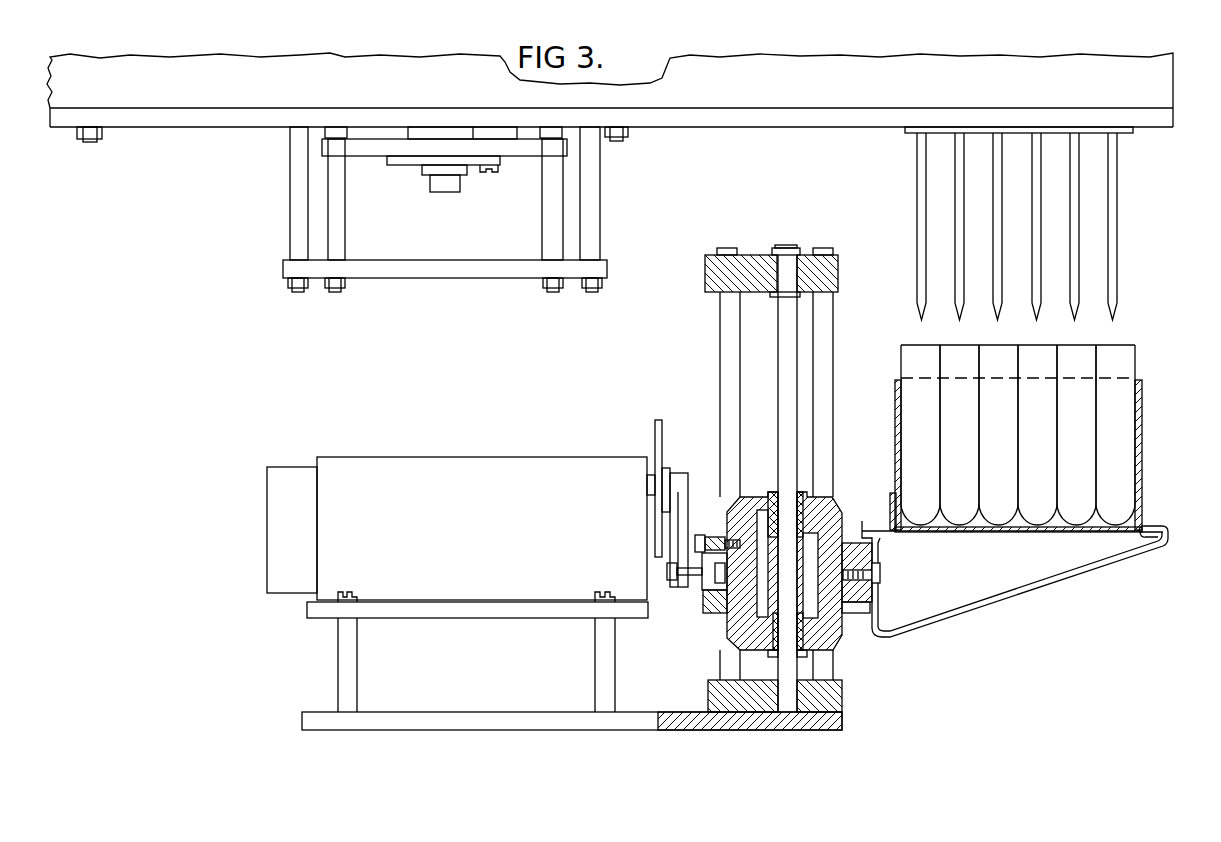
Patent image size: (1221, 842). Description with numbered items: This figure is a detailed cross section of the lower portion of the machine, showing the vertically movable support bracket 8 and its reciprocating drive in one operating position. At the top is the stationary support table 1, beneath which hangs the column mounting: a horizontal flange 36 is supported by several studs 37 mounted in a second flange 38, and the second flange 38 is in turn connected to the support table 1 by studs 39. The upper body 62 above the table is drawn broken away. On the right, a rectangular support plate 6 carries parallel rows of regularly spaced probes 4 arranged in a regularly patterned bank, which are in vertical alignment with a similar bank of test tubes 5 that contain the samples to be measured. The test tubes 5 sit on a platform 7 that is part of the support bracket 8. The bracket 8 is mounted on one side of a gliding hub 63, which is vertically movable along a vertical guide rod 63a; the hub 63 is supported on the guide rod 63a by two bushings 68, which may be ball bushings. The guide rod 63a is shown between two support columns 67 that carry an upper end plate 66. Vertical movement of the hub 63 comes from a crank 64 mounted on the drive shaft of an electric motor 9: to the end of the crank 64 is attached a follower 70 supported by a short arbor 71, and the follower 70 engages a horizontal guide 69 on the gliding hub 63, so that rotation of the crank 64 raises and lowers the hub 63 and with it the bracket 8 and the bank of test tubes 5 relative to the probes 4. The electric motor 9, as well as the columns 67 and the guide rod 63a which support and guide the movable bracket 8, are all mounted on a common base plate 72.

The support table 1 is at (147, 118).
The table body 62 is at (610, 80).
The studs 39 is at (295, 165).
The studs 37 is at (335, 190).
The second flange 38 is at (320, 272).
The horizontal flange 36 is at (370, 147).
The support plate 6 is at (945, 130).
The probes 4 is at (922, 206).
The test tubes 5 is at (938, 358).
The platform 7 is at (896, 440).
The support bracket 8 is at (983, 610).
The upper end plate 66 is at (748, 268).
The guide rod 63a is at (790, 330).
The support columns 67 is at (830, 315).
The bushings 68 is at (805, 492).
The gliding hub 63 is at (832, 602).
The crank 64 is at (685, 517).
The short arbor 71 is at (702, 585).
The follower 70 is at (712, 604).
The horizontal guide 69 is at (708, 618).
The electric motor 9 is at (457, 584).
The base plate 72 is at (553, 722).